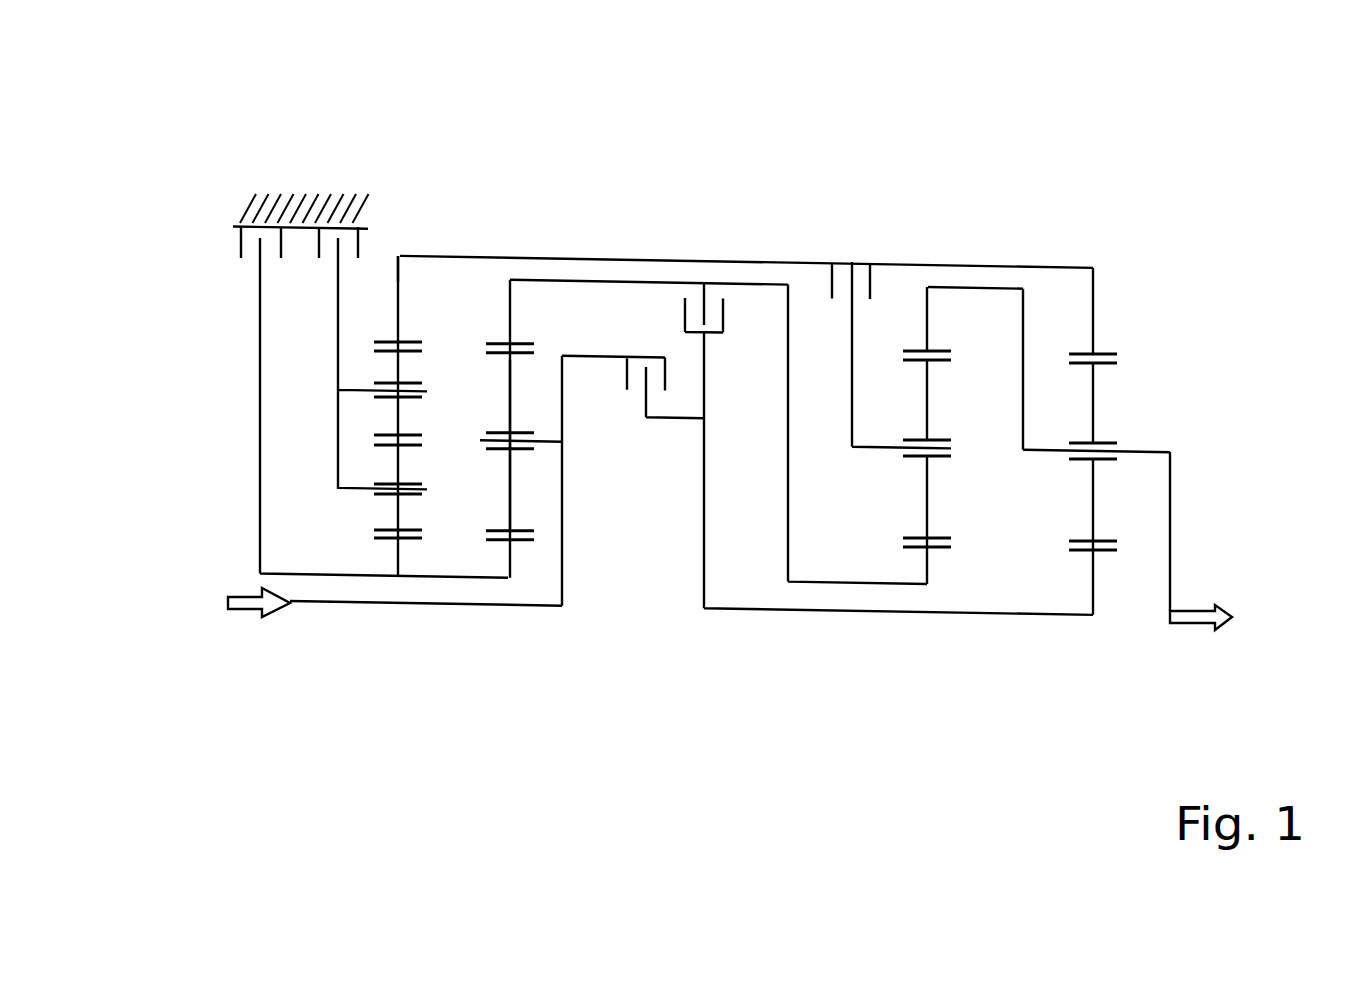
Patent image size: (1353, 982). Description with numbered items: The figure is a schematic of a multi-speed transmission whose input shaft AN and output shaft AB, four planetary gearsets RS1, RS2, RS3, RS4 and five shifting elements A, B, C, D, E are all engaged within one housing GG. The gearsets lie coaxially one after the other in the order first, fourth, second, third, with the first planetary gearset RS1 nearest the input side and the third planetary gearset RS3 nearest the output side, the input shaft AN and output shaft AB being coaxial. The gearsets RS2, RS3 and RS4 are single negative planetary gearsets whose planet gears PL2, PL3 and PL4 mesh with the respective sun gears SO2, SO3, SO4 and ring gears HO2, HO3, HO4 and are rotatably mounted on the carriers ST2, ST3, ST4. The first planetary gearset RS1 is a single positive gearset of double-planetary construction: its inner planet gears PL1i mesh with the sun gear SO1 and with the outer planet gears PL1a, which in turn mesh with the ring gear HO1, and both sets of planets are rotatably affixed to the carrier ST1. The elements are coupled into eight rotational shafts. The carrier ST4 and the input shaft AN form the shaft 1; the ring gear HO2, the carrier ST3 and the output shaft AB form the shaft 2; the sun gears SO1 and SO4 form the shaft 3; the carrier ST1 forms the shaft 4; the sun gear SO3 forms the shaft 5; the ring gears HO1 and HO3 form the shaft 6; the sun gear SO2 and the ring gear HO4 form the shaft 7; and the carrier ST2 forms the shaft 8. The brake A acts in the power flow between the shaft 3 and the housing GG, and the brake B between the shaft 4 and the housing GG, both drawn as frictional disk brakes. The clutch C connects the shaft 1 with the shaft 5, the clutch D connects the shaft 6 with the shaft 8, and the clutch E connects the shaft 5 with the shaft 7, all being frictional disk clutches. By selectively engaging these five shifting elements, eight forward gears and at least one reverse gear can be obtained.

The housing GG is at (293, 200).
The brake A is at (230, 271).
The brake B is at (315, 276).
The clutch C is at (651, 328).
The clutch D is at (855, 263).
The clutch E is at (738, 272).
The input shaft AN is at (250, 612).
The output shaft AB is at (1205, 624).
The shaft 1 is at (564, 533).
The shaft 2 is at (1012, 288).
The shaft 3 is at (433, 572).
The shaft 4 is at (338, 348).
The shaft 5 is at (887, 612).
The shaft 6 is at (805, 262).
The shaft 7 is at (862, 586).
The shaft 8 is at (852, 368).
The first planetary gearset RS1 is at (368, 511).
The second planetary gearset RS2 is at (955, 481).
The third planetary gearset RS3 is at (1113, 482).
The fourth planetary gearset RS4 is at (482, 480).
The ring gear HO1 is at (398, 282).
The ring gear HO2 is at (930, 322).
The ring gear HO3 is at (1093, 320).
The ring gear HO4 is at (513, 313).
The sun gear SO1 is at (393, 558).
The sun gear SO2 is at (928, 562).
The sun gear SO3 is at (1093, 562).
The sun gear SO4 is at (510, 548).
The carrier ST1 is at (340, 487).
The carrier ST2 is at (853, 450).
The carrier ST3 is at (1143, 452).
The carrier ST4 is at (542, 441).
The outer planet gears PL1a is at (402, 372).
The inner planet gears PL1i is at (397, 463).
The planet gears PL2 is at (926, 475).
The planet gears PL3 is at (1095, 403).
The planet gears PL4 is at (507, 405).